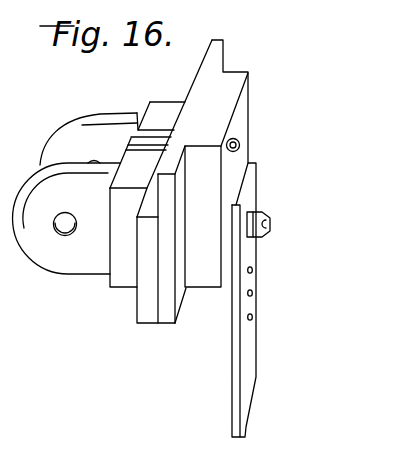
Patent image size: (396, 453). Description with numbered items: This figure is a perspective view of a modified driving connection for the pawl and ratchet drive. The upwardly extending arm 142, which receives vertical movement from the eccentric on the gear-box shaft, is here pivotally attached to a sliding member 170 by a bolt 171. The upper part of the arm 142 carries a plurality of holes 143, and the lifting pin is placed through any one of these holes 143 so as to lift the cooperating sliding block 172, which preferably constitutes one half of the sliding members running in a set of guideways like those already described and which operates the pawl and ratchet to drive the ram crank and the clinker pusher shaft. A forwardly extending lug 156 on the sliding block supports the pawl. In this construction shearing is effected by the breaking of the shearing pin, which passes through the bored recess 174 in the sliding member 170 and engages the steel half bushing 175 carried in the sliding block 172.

The lug 156 is at (78, 137).
The sliding member 170 is at (241, 110).
The bored recess 174 is at (240, 143).
The sliding block 172 is at (147, 237).
The steel half bushing 175 is at (140, 137).
The bolt 171 is at (264, 210).
The arm 142 is at (254, 342).
The holes 143 is at (253, 317).